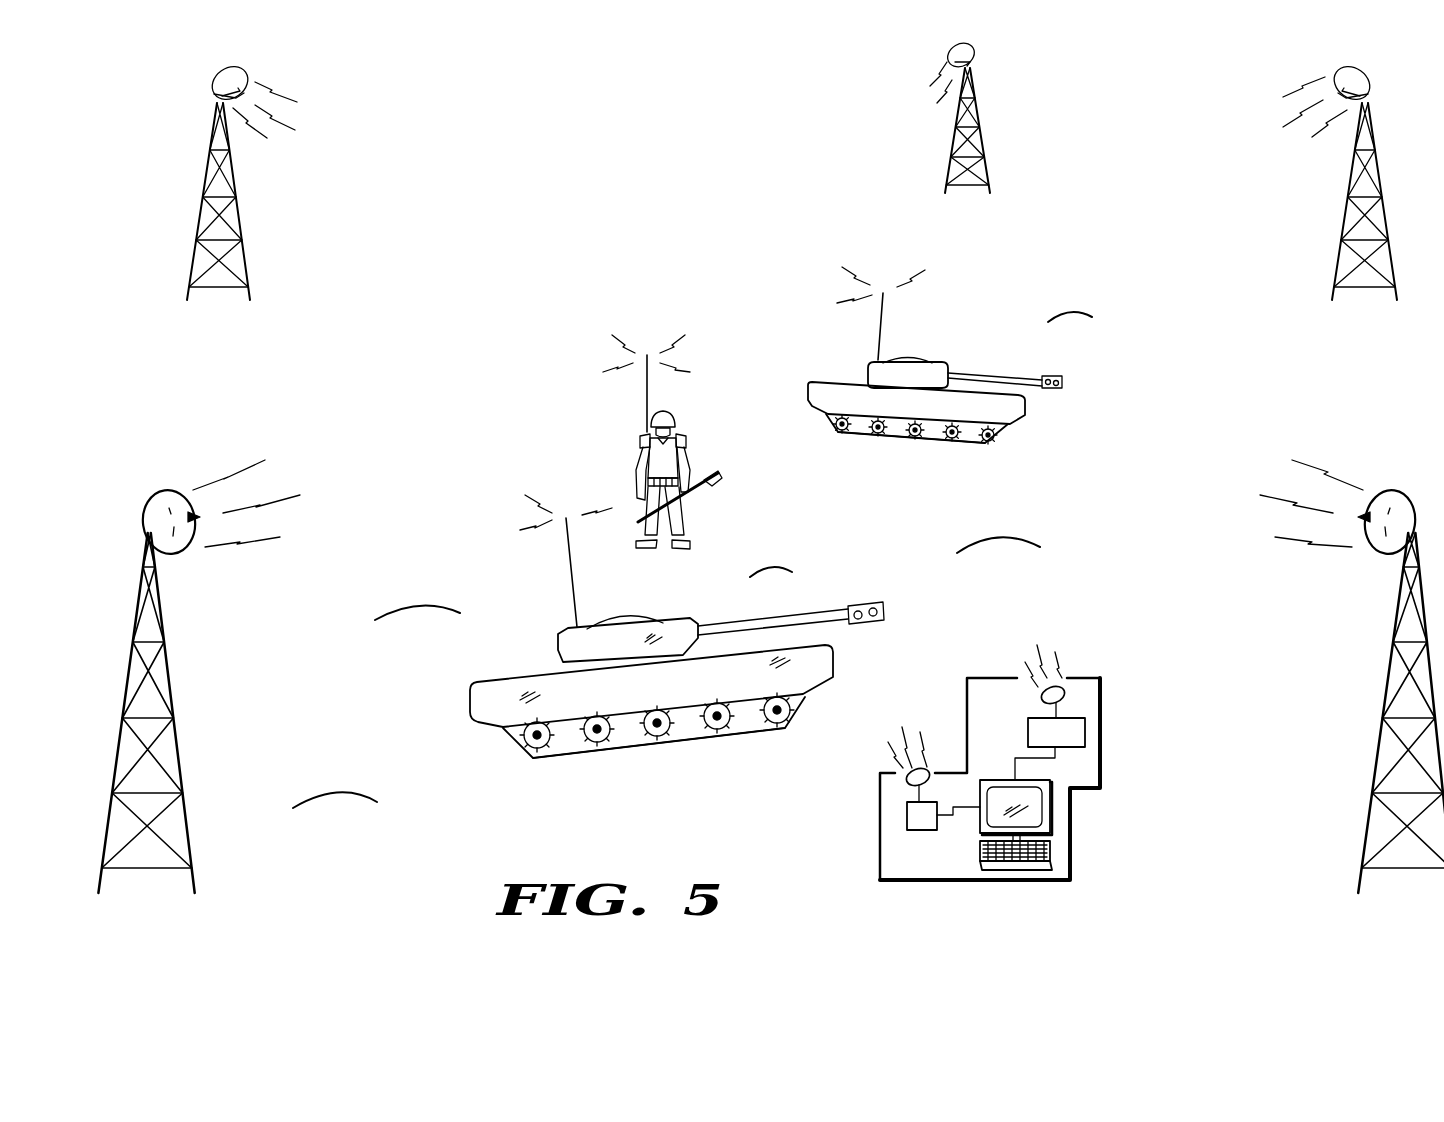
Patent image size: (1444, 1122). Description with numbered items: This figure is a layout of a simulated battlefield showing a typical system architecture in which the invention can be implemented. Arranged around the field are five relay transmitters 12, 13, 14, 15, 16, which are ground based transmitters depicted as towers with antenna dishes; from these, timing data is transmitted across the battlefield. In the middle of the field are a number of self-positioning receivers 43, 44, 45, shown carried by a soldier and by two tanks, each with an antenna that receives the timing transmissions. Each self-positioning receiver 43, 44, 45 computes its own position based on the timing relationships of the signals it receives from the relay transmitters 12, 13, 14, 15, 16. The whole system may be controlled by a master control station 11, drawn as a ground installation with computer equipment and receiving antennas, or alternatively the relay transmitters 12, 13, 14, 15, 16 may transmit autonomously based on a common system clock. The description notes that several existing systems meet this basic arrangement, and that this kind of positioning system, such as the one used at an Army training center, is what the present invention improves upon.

The master control station 11 is at (880, 828).
The relay transmitter 12 is at (981, 131).
The relay transmitter 13 is at (1348, 198).
The relay transmitter 14 is at (1381, 718).
The relay transmitter 15 is at (181, 757).
The relay transmitter 16 is at (236, 200).
The self-positioning receiver 43 is at (648, 450).
The self-positioning receiver 44 is at (470, 701).
The self-positioning receiver 45 is at (810, 384).